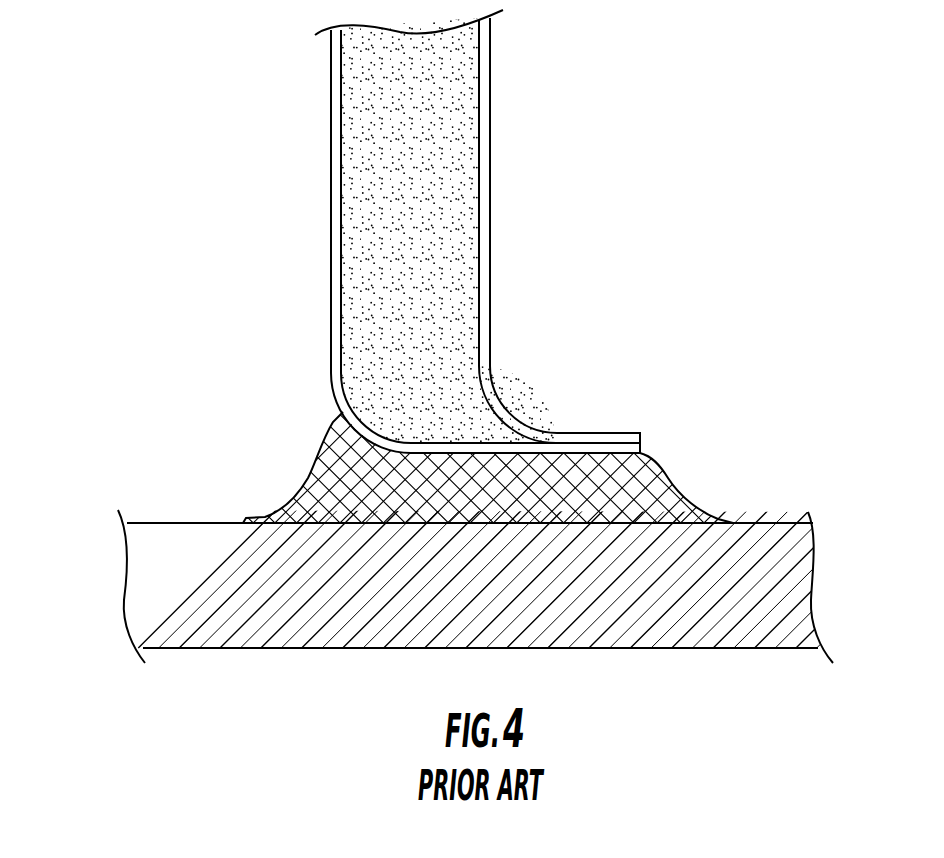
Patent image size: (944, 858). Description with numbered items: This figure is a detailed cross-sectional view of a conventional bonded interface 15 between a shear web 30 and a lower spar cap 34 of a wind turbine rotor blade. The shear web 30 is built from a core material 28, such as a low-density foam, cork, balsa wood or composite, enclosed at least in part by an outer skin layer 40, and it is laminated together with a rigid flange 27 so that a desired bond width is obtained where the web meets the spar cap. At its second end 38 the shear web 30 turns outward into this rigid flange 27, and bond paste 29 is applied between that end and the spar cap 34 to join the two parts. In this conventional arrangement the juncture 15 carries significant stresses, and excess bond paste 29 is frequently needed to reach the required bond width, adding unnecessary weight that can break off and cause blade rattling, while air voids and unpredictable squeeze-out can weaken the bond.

The interface 15 is at (150, 236).
The rigid flange 27 is at (584, 432).
The core material 28 is at (419, 236).
The bond paste 29 is at (707, 518).
The shear web 30 is at (323, 223).
The lower spar cap 34 is at (182, 522).
The second end 38 is at (362, 463).
The outer skin layer 40 is at (490, 172).